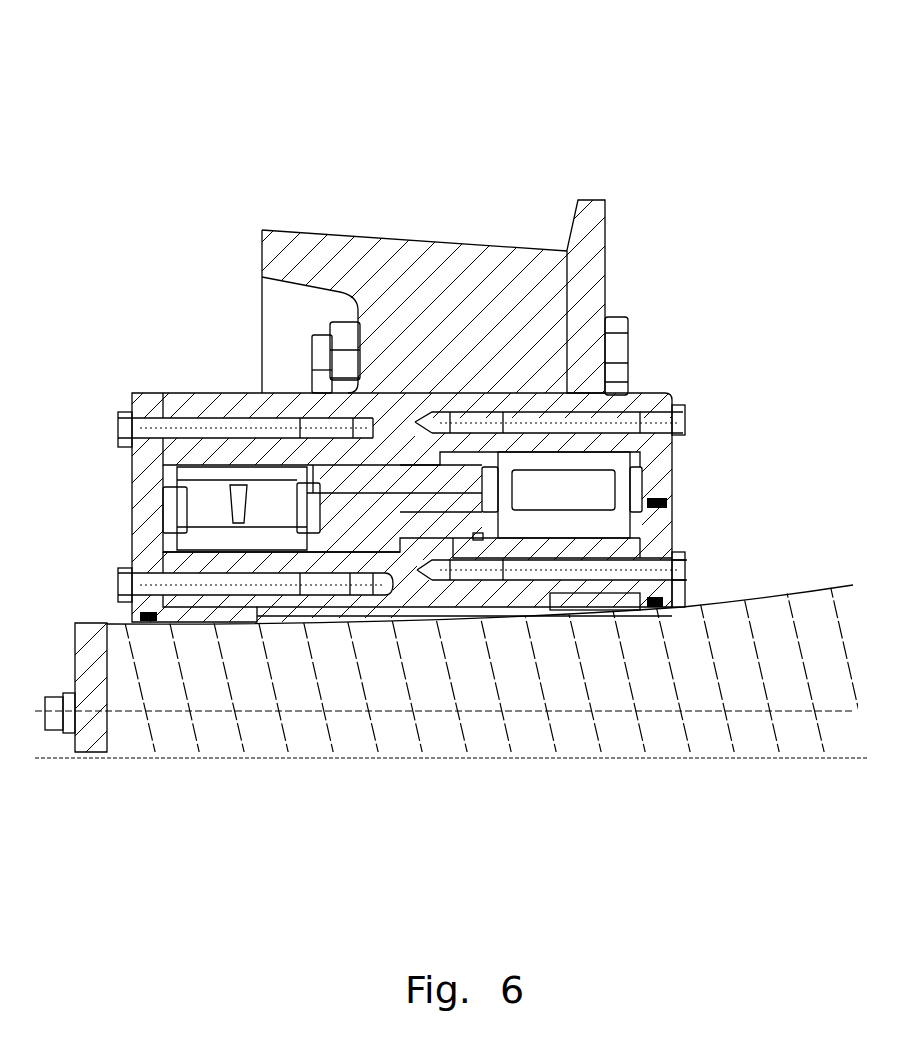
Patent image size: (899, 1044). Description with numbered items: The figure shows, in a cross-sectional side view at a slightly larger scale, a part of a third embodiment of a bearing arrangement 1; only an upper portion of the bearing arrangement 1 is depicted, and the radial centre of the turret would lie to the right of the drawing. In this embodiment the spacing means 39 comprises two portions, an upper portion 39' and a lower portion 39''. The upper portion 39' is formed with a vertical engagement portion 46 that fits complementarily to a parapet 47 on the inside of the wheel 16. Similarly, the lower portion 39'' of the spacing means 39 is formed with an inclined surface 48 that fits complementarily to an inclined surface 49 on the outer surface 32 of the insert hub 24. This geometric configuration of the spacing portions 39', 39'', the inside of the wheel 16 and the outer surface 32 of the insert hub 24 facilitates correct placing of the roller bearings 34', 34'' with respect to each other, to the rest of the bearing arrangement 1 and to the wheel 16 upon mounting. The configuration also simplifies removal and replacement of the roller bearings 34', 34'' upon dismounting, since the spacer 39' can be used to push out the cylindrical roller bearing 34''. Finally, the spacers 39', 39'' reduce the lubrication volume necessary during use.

The bearing arrangement 1 is at (150, 325).
The wheel 16 is at (300, 232).
The spacing means 39 is at (449, 386).
The upper portion of the spacing means 39' is at (356, 442).
The lower portion of the spacing means 39'' is at (465, 559).
The parapet 47 is at (418, 458).
The vertical engagement portion 46 is at (445, 455).
The cylindrical roller bearing 34'' is at (646, 450).
The roller bearing 34' is at (174, 518).
The inclined surface 49 is at (225, 505).
The outer surface 32 is at (310, 553).
The insert hub 24 is at (440, 500).
The inclined surface 48 is at (500, 540).